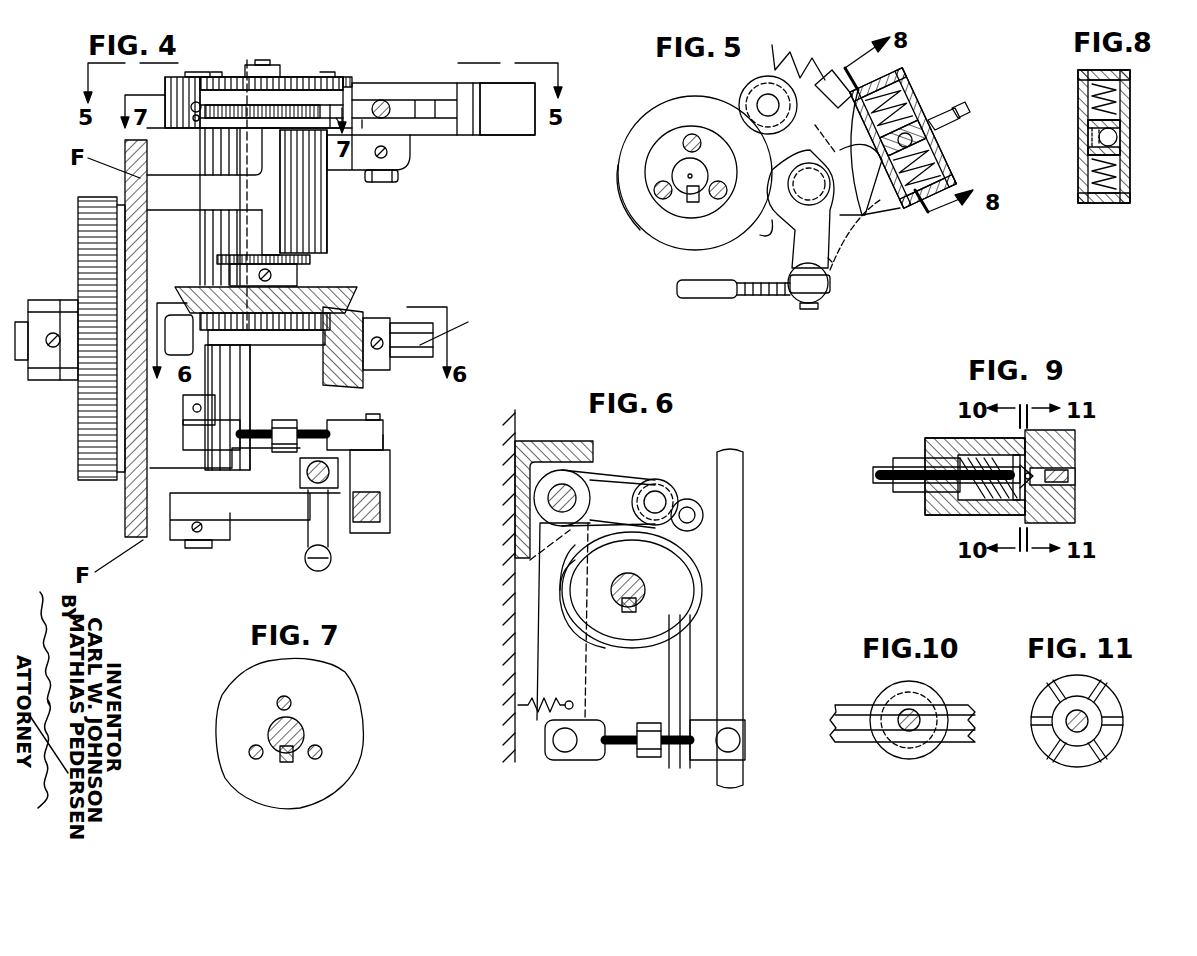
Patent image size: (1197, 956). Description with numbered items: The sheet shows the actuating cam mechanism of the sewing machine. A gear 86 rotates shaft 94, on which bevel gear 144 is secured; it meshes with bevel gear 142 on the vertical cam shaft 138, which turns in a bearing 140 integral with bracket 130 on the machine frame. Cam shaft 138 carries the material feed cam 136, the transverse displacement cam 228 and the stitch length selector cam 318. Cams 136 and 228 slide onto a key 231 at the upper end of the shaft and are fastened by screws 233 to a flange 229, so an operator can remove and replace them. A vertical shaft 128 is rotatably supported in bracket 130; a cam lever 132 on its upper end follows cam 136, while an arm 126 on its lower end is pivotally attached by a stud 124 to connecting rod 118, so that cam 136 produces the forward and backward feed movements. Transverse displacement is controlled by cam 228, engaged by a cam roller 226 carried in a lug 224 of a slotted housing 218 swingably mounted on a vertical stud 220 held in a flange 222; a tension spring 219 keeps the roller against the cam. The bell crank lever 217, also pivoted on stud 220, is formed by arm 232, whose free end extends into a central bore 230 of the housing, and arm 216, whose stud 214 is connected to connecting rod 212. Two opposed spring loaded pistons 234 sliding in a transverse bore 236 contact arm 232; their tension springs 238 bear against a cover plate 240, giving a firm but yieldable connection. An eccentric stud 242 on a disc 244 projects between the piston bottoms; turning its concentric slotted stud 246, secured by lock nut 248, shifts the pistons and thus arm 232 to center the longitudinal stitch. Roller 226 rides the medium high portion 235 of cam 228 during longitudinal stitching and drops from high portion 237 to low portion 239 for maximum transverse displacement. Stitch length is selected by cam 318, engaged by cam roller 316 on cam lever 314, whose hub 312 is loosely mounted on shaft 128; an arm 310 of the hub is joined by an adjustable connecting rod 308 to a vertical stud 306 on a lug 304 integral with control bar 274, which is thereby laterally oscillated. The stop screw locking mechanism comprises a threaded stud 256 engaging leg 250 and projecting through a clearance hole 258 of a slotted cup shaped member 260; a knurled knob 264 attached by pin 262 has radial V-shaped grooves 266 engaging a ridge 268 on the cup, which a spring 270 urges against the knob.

In FIG. 4, the gear 86 is at (95, 385).
In FIG. 4, the shaft 94 is at (25, 330).
In FIG. 4, the connecting rod 118 is at (306, 478).
In FIG. 6, the connecting rod 118 is at (690, 652).
In FIG. 4, the stud 124 is at (302, 466).
In FIG. 6, the stud 124 is at (695, 515).
In FIG. 4, the arm 126 is at (280, 505).
In FIG. 6, the arm 126 is at (560, 590).
In FIG. 4, the vertical shaft 128 is at (195, 75).
In FIG. 6, the vertical shaft 128 is at (548, 498).
In FIG. 4, the bracket 130 is at (155, 200).
In FIG. 6, the bracket 130 is at (538, 452).
In FIG. 4, the cam lever 132 is at (180, 92).
In FIG. 4, the cam 136 is at (292, 72).
In FIG. 7, the cam 136 is at (238, 705).
In FIG. 4, the vertical cam shaft 138 is at (258, 70).
In FIG. 5, the vertical cam shaft 138 is at (688, 178).
In FIG. 6, the vertical cam shaft 138 is at (628, 612).
In FIG. 7, the vertical cam shaft 138 is at (285, 735).
In FIG. 4, the bearing 140 is at (310, 235).
In FIG. 4, the bevel gear 142 is at (295, 295).
In FIG. 4, the bevel gear 144 is at (375, 310).
In FIG. 5, the connecting rod 212 is at (720, 288).
In FIG. 4, the stud 214 is at (386, 103).
In FIG. 5, the stud 214 is at (812, 308).
In FIG. 4, the arm 216 is at (400, 108).
In FIG. 5, the arm 216 is at (805, 240).
In FIG. 4, the bell crank lever 217 is at (375, 123).
In FIG. 5, the bell crank lever 217 is at (835, 262).
In FIG. 4, the slotted housing 218 is at (467, 115).
In FIG. 5, the slotted housing 218 is at (848, 205).
In FIG. 5, the tension spring 219 is at (782, 50).
In FIG. 4, the vertical stud 220 is at (395, 178).
In FIG. 5, the vertical stud 220 is at (810, 183).
In FIG. 4, the flange 222 is at (398, 150).
In FIG. 4, the lug 224 is at (332, 118).
In FIG. 5, the lug 224 is at (804, 110).
In FIG. 4, the cam roller 226 is at (345, 80).
In FIG. 5, the cam roller 226 is at (750, 100).
In FIG. 4, the cam 228 is at (240, 112).
In FIG. 5, the cam 228 is at (640, 192).
In FIG. 4, the flange 229 is at (225, 108).
In FIG. 5, the bore 230 is at (872, 165).
In FIG. 4, the key 231 is at (283, 62).
In FIG. 5, the key 231 is at (693, 202).
In FIG. 7, the key 231 is at (295, 758).
In FIG. 5, the arm 232 is at (897, 182).
In FIG. 4, the screws 233 is at (195, 112).
In FIG. 5, the screws 233 is at (660, 185).
In FIG. 7, the screws 233 is at (290, 705).
In FIG. 5, the spring loaded piston 234 is at (895, 75).
In FIG. 8, the spring loaded piston 234 is at (1122, 108).
In FIG. 5, the medium high portion 235 is at (648, 128).
In FIG. 8, the transverse bore 236 is at (1090, 130).
In FIG. 5, the high portion 237 is at (772, 225).
In FIG. 5, the tension springs 238 is at (905, 85).
In FIG. 8, the tension springs 238 is at (1122, 90).
In FIG. 5, the low portion 239 is at (668, 243).
In FIG. 4, the cover plate 240 is at (505, 115).
In FIG. 5, the cover plate 240 is at (948, 183).
In FIG. 8, the cover plate 240 is at (1095, 195).
In FIG. 5, the eccentric stud 242 is at (915, 105).
In FIG. 8, the eccentric stud 242 is at (1122, 130).
In FIG. 5, the disc 244 is at (925, 138).
In FIG. 8, the disc 244 is at (1118, 140).
In FIG. 5, the slotted stud 246 is at (945, 120).
In FIG. 5, the lock nut 248 is at (940, 112).
In FIG. 9, the leg 250 is at (905, 487).
In FIG. 10, the leg 250 is at (845, 712).
In FIG. 9, the stud 256 is at (890, 470).
In FIG. 10, the stud 256 is at (905, 732).
In FIG. 11, the stud 256 is at (1077, 733).
In FIG. 9, the clearance hole 258 is at (1015, 485).
In FIG. 9, the cup shaped member 260 is at (935, 445).
In FIG. 10, the cup shaped member 260 is at (932, 752).
In FIG. 9, the pin 262 is at (1060, 480).
In FIG. 9, the knurled knob 264 is at (1055, 443).
In FIG. 11, the knurled knob 264 is at (1102, 700).
In FIG. 11, the V-shaped grooves 266 is at (1045, 725).
In FIG. 9, the ridge 268 is at (1038, 478).
In FIG. 10, the ridge 268 is at (936, 712).
In FIG. 9, the spring 270 is at (955, 512).
In FIG. 4, the control bar 274 is at (367, 508).
In FIG. 6, the control bar 274 is at (733, 553).
In FIG. 4, the lug 304 is at (370, 475).
In FIG. 6, the lug 304 is at (738, 722).
In FIG. 4, the vertical stud 306 is at (375, 425).
In FIG. 6, the vertical stud 306 is at (740, 740).
In FIG. 4, the adjustable connecting rod 308 is at (283, 428).
In FIG. 6, the adjustable connecting rod 308 is at (648, 735).
In FIG. 4, the arm 310 is at (202, 408).
In FIG. 6, the arm 310 is at (555, 662).
In FIG. 4, the hub 312 is at (212, 378).
In FIG. 6, the hub 312 is at (577, 495).
In FIG. 4, the cam lever 314 is at (270, 335).
In FIG. 6, the cam lever 314 is at (608, 490).
In FIG. 4, the cam roller 316 is at (268, 262).
In FIG. 6, the cam roller 316 is at (665, 492).
In FIG. 4, the stitch length selector cam 318 is at (222, 285).
In FIG. 6, the stitch length selector cam 318 is at (700, 592).